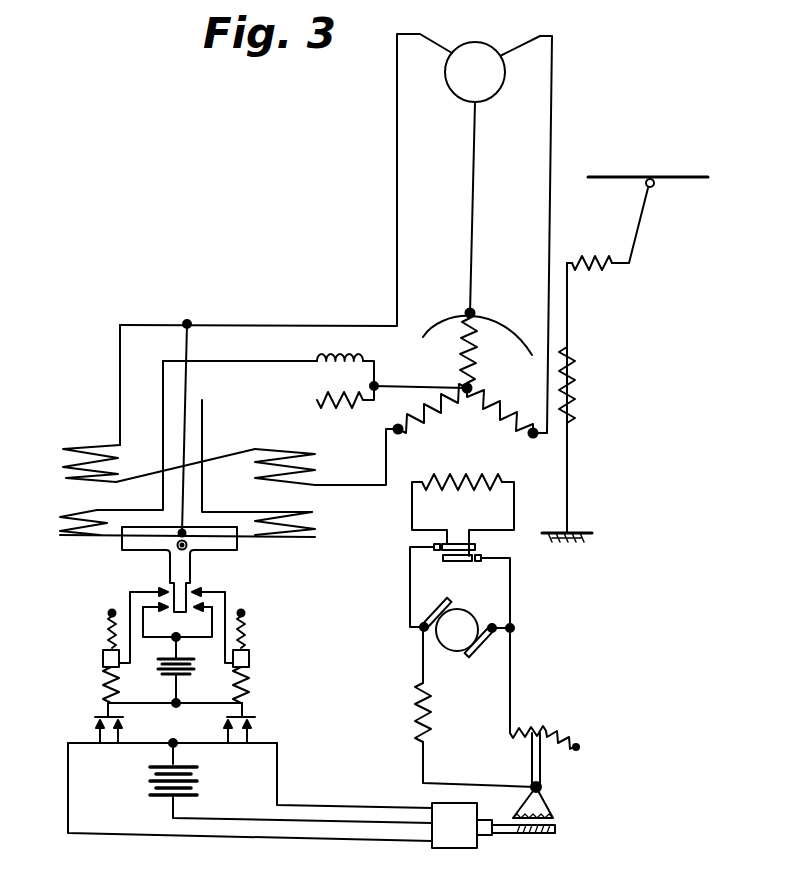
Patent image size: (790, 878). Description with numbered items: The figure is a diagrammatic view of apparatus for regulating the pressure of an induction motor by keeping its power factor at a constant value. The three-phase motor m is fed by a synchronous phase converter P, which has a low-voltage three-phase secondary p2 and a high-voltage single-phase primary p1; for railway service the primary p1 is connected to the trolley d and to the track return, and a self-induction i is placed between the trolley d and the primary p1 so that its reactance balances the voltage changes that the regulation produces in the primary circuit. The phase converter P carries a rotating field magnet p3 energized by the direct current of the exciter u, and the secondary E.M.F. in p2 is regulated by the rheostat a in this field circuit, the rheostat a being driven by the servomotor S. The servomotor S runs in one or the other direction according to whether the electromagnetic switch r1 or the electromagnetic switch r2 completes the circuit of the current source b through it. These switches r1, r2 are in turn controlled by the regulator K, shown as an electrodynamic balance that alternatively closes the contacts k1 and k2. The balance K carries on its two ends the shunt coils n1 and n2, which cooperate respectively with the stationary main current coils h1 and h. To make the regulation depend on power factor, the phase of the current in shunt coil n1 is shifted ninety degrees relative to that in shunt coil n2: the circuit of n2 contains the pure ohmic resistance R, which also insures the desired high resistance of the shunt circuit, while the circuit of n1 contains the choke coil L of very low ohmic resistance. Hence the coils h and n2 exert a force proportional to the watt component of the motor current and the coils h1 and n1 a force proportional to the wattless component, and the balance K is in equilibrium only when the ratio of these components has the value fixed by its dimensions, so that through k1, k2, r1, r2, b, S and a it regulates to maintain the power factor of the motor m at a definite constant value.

The three-phase motor m is at (475, 72).
The trolley d is at (641, 203).
The self-induction i is at (589, 251).
The synchronous phase converter P is at (472, 316).
The low-voltage three-phase secondary p2 is at (466, 375).
The high-voltage single-phase primary p1 is at (580, 385).
The choke coil L is at (347, 358).
The ohmic resistance R is at (345, 416).
The main current coil h1 is at (79, 463).
The main current coil h is at (296, 467).
The shunt coil n1 is at (71, 528).
The shunt coil n2 is at (302, 531).
The regulator K is at (234, 549).
The contact k1 is at (158, 586).
The contact k2 is at (209, 578).
The electromagnetic switch r1 is at (108, 706).
The electromagnetic switch r2 is at (240, 706).
The current source b is at (183, 783).
The servomotor S is at (493, 825).
The rheostat a is at (541, 768).
The exciter u is at (405, 712).
The rotating field magnet p3 is at (462, 498).